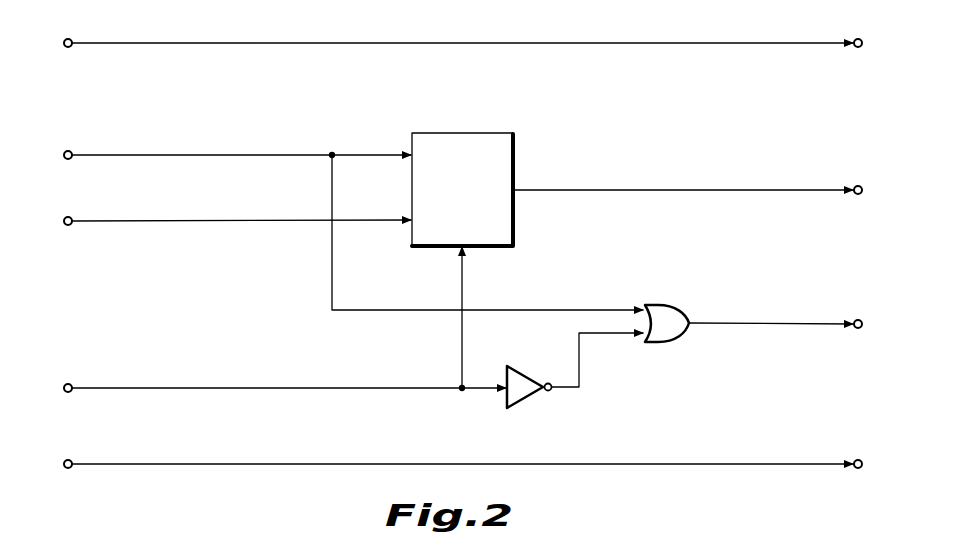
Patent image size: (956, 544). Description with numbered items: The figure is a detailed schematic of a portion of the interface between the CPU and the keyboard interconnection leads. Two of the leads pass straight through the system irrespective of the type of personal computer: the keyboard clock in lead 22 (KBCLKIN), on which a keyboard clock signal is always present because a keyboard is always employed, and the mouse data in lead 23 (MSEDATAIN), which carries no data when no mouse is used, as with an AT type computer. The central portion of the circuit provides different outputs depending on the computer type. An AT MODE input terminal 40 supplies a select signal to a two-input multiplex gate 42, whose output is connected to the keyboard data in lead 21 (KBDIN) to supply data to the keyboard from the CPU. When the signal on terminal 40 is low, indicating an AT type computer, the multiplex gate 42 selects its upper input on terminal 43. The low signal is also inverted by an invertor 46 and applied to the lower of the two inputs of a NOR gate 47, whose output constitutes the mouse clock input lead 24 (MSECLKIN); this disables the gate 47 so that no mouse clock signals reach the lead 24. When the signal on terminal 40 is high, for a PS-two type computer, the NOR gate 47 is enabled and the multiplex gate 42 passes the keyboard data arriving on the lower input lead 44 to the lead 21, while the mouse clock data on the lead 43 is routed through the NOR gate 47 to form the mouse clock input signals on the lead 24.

The keyboard clock in lead 22 is at (673, 25).
The keyboard data in lead 21 is at (652, 188).
The two-input multiplex gate 42 is at (479, 133).
The upper input terminal 43 is at (171, 158).
The lower input lead 44 is at (171, 224).
The NOR gate 47 is at (668, 304).
The invertor 46 is at (526, 350).
The mouse clock input lead 24 is at (738, 326).
The mouse data in lead 23 is at (723, 467).
The AT MODE input terminal 40 is at (171, 391).